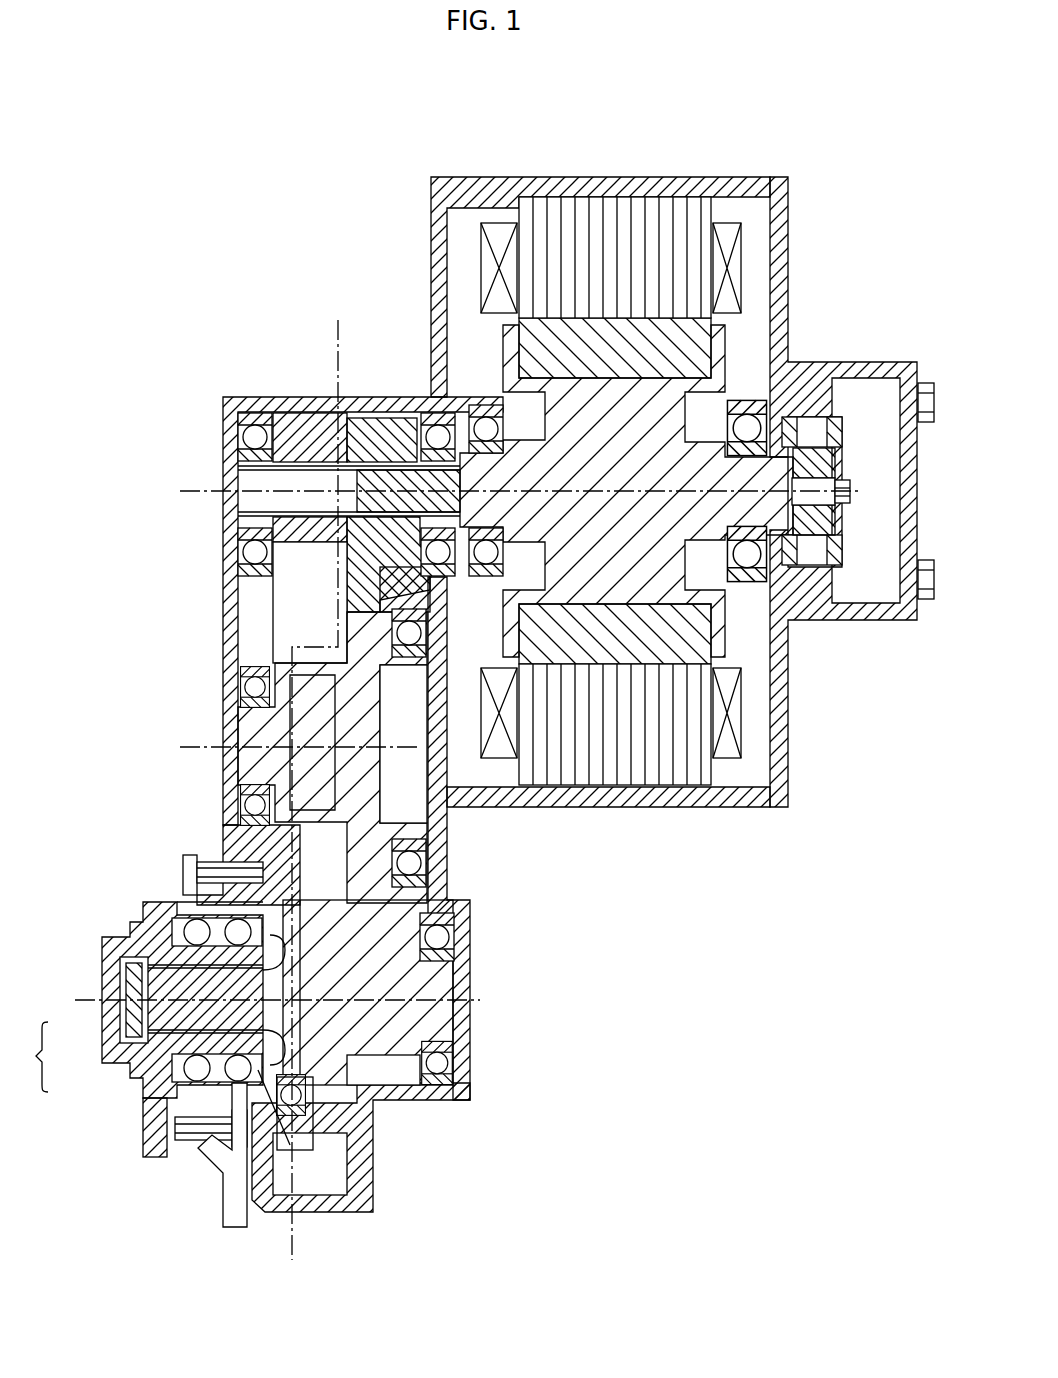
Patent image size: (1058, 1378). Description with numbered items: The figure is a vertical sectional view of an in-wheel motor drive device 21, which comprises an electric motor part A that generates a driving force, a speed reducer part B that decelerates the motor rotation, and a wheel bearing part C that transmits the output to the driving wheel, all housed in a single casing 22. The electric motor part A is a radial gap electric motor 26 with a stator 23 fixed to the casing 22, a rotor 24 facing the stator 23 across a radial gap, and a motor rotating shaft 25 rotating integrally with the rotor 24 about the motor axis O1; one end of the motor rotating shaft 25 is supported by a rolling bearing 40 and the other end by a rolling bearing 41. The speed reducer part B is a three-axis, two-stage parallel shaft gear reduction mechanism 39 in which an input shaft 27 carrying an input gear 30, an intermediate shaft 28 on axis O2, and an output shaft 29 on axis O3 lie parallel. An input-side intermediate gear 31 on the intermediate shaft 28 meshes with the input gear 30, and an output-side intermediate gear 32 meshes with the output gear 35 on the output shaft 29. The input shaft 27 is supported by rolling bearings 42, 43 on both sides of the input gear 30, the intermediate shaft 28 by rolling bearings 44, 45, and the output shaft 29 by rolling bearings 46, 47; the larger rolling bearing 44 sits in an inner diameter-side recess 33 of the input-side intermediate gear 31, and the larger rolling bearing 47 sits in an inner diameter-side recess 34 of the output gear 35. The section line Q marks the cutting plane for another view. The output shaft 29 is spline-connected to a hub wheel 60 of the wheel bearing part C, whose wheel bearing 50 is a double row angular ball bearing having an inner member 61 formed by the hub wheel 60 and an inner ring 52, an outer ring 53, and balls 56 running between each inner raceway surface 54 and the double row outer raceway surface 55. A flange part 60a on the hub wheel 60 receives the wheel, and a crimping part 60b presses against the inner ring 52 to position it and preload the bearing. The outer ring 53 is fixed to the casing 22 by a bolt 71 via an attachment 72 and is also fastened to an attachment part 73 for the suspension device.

The in-wheel motor drive device 21 is at (608, 142).
The casing 22 is at (431, 242).
The stator 23 is at (663, 210).
The rotor 24 is at (690, 355).
The motor rotating shaft 25 is at (725, 508).
The radial gap electric motor 26 is at (745, 325).
The input shaft 27 is at (297, 455).
The intermediate shaft 28 is at (262, 727).
The output shaft 29 is at (430, 975).
The input gear 30 is at (372, 440).
The input-side intermediate gear 31 is at (375, 563).
The output-side intermediate gear 32 is at (315, 690).
The inner diameter-side recess 33 is at (435, 600).
The inner diameter-side recess 34 is at (305, 860).
The output gear 35 is at (285, 822).
The parallel shaft gear reduction mechanism 39 is at (312, 603).
The rolling bearing 40 is at (486, 430).
The rolling bearing 41 is at (748, 430).
The rolling bearing 42 is at (438, 433).
The rolling bearing 43 is at (256, 433).
The rolling bearing 44 is at (410, 633).
The rolling bearing 45 is at (256, 686).
The rolling bearing 46 is at (440, 938).
The rolling bearing 47 is at (300, 902).
The wheel bearing 50 is at (122, 928).
The inner ring 52 is at (125, 1020).
The outer ring 53 is at (205, 1150).
The inner raceway surface 54 is at (170, 1075).
The outer raceway surface 55 is at (178, 1127).
The ball 56 is at (195, 940).
The hub wheel 60 is at (125, 1060).
The flange part 60a is at (150, 1150).
The crimping part 60b is at (290, 1030).
The inner member 61 is at (28, 1057).
The bolt 71 is at (185, 862).
The attachment 72 is at (212, 898).
The attachment part 73 is at (230, 1205).
The electric motor part A is at (808, 228).
The speed reducer part B is at (190, 557).
The wheel bearing part C is at (118, 893).
The motor axis O1 is at (215, 491).
The counter axis O2 is at (215, 747).
The hub axis O3 is at (100, 1000).
The section line Q is at (338, 334).